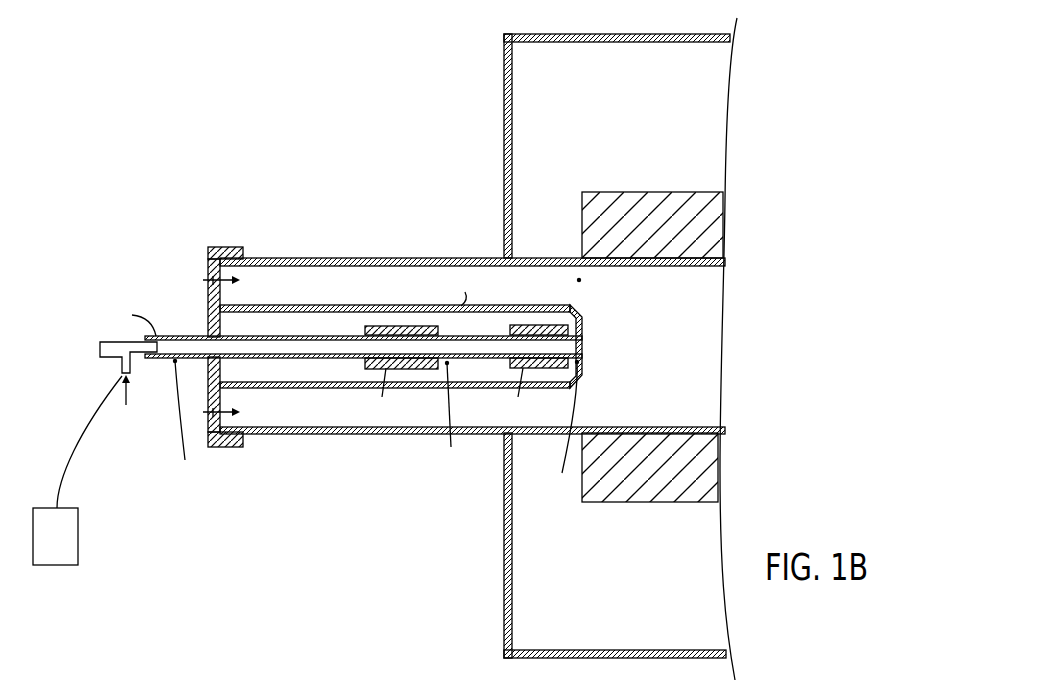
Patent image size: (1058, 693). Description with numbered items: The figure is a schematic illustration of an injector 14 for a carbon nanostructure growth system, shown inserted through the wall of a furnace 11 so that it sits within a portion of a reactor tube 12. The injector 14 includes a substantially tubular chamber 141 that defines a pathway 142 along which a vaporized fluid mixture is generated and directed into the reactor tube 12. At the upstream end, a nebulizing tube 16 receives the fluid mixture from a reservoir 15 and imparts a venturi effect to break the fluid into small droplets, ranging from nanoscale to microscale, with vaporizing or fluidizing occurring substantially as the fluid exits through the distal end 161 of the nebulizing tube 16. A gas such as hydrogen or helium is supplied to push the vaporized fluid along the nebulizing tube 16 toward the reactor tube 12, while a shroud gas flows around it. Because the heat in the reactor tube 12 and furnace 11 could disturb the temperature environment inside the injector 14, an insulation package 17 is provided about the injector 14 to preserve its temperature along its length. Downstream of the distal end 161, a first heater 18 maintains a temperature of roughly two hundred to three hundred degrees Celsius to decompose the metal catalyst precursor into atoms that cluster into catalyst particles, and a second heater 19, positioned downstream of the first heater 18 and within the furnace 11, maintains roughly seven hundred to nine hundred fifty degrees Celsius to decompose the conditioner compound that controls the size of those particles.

The furnace 11 is at (522, 115).
The reactor tube 12 is at (555, 277).
The injector 14 is at (432, 303).
The tubular chamber 141 is at (318, 381).
The pathway 142 is at (343, 373).
The reservoir 15 is at (78, 538).
The nebulizing tube 16 is at (93, 348).
The distal end 161 is at (163, 336).
The insulation package 17 is at (340, 312).
The first heater 18 is at (440, 368).
The second heater 19 is at (535, 325).